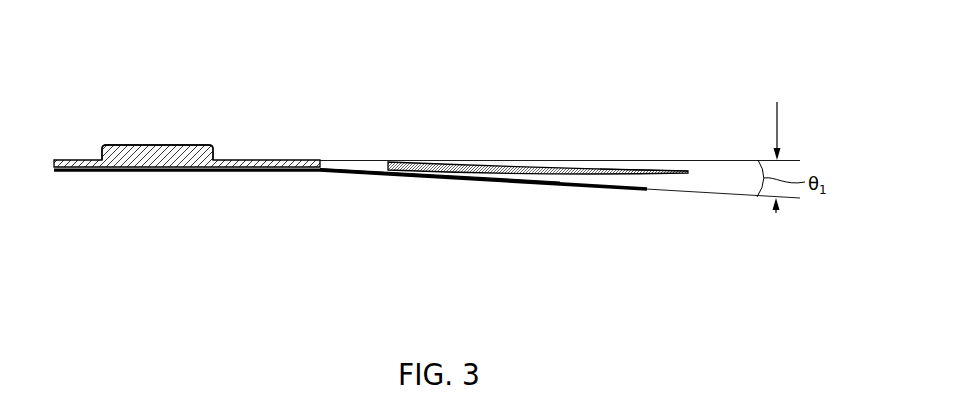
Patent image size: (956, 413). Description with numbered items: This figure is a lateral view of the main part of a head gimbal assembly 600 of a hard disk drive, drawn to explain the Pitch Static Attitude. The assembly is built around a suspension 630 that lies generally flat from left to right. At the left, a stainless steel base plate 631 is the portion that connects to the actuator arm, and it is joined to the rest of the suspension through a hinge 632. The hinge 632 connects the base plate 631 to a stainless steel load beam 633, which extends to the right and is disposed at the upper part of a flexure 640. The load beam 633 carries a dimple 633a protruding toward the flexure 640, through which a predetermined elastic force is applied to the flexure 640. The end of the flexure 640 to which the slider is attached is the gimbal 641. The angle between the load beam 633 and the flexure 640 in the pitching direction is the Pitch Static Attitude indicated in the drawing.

The head gimbal assembly 600 is at (427, 129).
The suspension 630 is at (187, 126).
The base plate 631 is at (155, 144).
The hinge 632 is at (345, 166).
The load beam 633 is at (503, 168).
The dimple 633a is at (598, 170).
The flexure 640 is at (475, 180).
The gimbal 641 is at (600, 187).